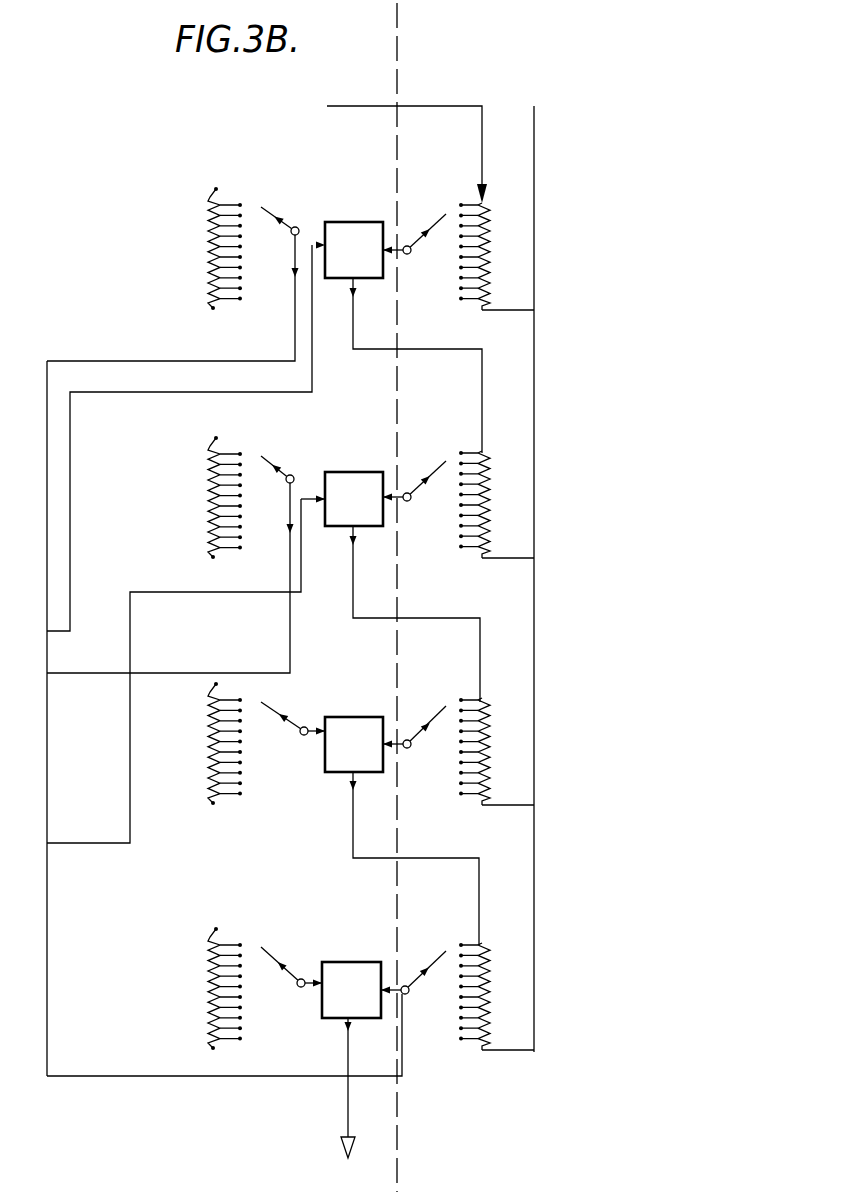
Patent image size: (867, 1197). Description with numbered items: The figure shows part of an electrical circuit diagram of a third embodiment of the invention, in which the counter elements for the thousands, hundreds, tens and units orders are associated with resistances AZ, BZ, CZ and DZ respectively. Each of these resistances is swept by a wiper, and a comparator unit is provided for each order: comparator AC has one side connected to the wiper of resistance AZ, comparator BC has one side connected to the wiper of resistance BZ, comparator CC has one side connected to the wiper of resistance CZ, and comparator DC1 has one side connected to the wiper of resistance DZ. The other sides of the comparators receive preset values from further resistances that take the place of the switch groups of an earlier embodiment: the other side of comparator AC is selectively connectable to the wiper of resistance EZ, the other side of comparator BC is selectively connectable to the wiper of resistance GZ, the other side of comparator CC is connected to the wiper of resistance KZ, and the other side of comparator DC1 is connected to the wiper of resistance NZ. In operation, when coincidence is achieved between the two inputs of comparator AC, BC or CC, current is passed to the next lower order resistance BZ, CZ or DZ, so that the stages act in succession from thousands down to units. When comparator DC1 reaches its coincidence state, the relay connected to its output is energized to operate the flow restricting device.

The resistance EZ is at (253, 252).
The comparator unit AC is at (350, 236).
The resistance AZ is at (468, 253).
The resistance GZ is at (251, 500).
The comparator unit BC is at (350, 486).
The resistance BZ is at (468, 501).
The resistance KZ is at (258, 746).
The comparator unit CC is at (350, 731).
The resistance CZ is at (468, 747).
The resistance NZ is at (256, 991).
The comparator unit DC1 is at (348, 976).
The resistance DZ is at (467, 992).